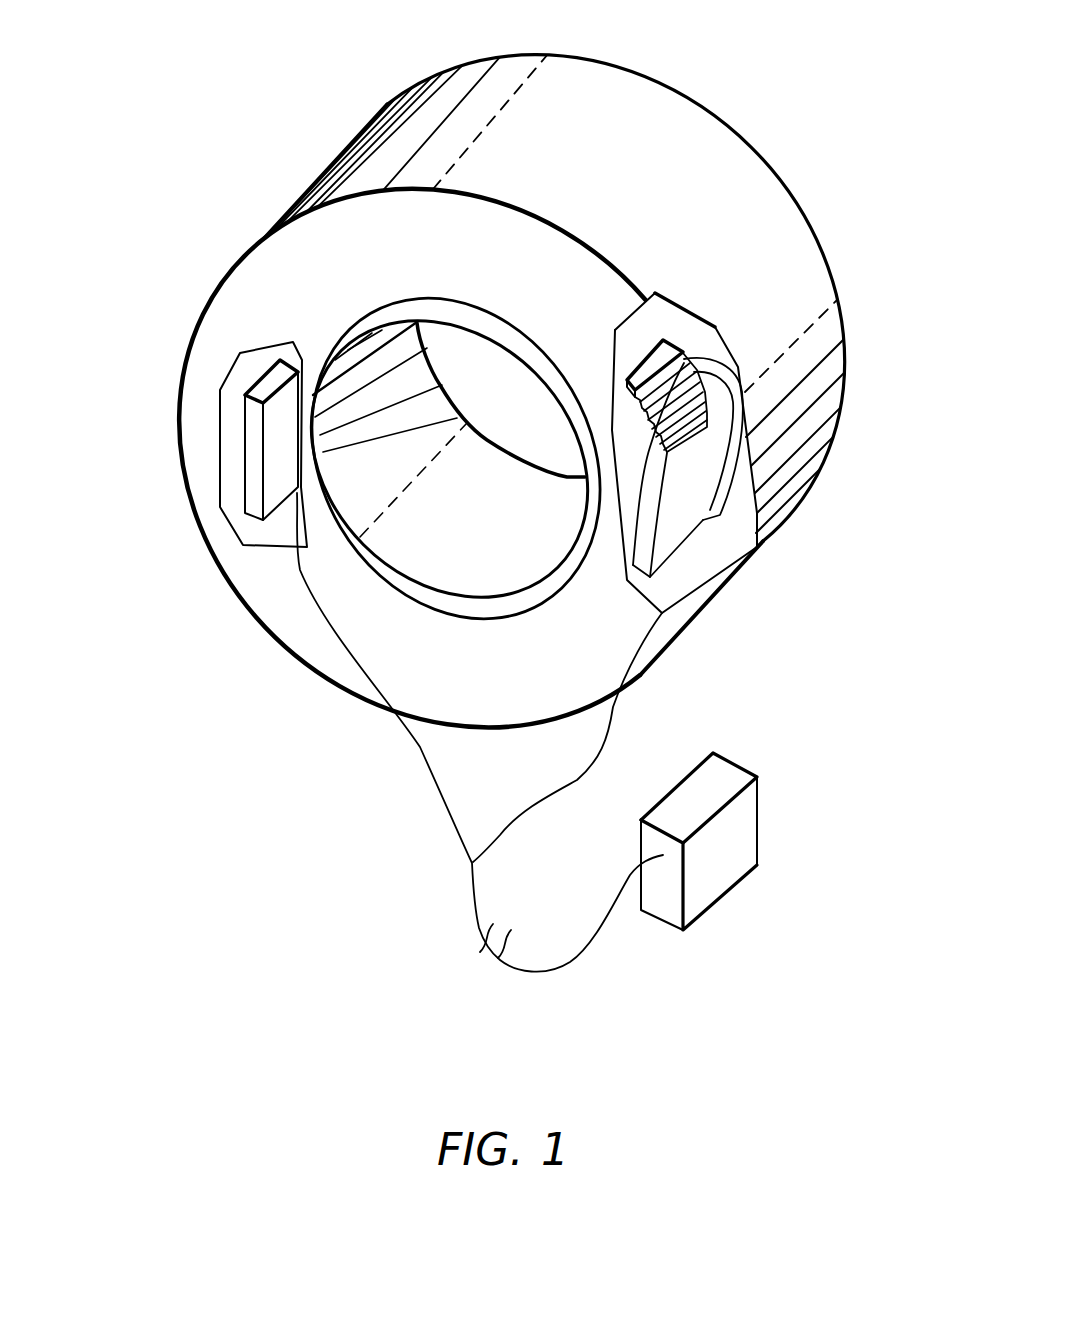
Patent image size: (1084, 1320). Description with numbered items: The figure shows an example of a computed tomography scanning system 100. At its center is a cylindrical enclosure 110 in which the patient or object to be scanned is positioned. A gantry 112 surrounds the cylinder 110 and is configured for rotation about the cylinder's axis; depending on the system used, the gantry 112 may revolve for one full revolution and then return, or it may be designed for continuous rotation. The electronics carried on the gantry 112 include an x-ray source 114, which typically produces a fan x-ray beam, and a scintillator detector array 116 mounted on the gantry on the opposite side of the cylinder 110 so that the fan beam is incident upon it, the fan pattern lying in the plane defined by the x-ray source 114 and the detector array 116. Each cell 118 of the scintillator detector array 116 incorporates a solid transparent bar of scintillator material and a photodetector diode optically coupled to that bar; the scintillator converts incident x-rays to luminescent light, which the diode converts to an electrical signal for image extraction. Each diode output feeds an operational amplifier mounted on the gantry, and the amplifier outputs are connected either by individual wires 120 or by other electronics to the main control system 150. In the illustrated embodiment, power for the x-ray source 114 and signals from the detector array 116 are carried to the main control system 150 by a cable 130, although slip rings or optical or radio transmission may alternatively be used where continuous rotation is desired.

The computed tomography scanning system 100 is at (563, 42).
The cylindrical enclosure 110 is at (551, 385).
The gantry 112 is at (437, 102).
The x-ray source 114 is at (255, 472).
The scintillator detector array 116 is at (673, 340).
The cell 118 is at (690, 352).
The individual wires 120 is at (703, 372).
The cable 130 is at (473, 910).
The main control system 150 is at (760, 828).